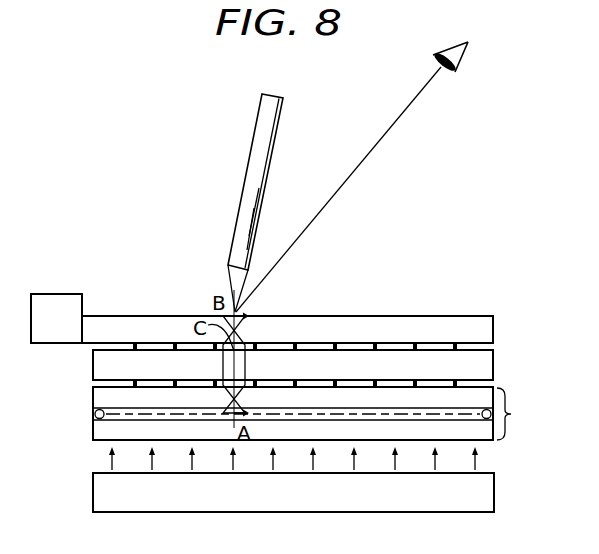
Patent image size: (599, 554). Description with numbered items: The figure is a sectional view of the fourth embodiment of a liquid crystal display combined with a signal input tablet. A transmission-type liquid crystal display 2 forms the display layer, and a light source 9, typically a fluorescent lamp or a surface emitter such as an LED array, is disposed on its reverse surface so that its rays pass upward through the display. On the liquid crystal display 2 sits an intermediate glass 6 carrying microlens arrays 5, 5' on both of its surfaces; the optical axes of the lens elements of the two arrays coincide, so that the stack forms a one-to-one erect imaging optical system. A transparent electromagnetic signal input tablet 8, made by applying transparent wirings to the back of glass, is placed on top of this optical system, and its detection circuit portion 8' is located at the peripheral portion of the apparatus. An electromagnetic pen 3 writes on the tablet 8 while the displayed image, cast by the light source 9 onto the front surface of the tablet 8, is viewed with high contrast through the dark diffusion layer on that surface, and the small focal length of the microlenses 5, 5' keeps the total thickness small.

The electromagnetic pen 3 is at (247, 168).
The detection circuit portion 8' is at (56, 298).
The transparent electromagnetic signal input tablet 8 is at (315, 330).
The microlens array 5 is at (275, 358).
The microlens array 5' is at (275, 387).
The intermediate glass 6 is at (493, 365).
The liquid crystal display 2 is at (512, 414).
The light source 9 is at (494, 490).